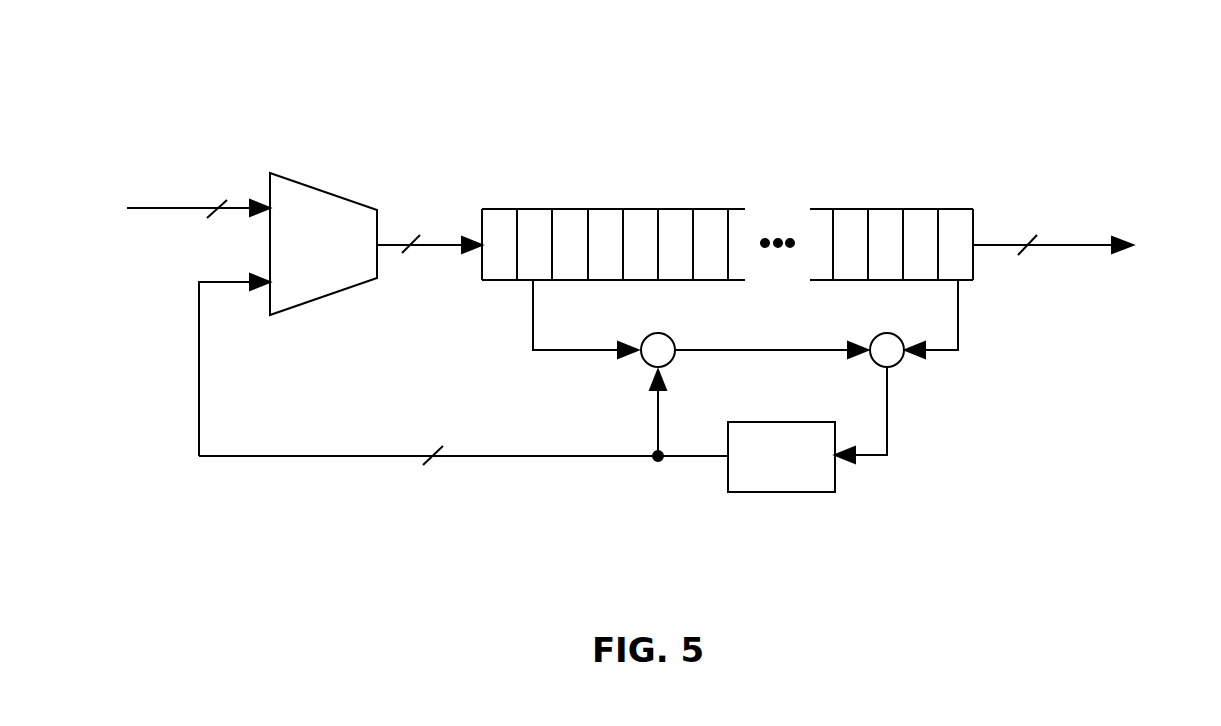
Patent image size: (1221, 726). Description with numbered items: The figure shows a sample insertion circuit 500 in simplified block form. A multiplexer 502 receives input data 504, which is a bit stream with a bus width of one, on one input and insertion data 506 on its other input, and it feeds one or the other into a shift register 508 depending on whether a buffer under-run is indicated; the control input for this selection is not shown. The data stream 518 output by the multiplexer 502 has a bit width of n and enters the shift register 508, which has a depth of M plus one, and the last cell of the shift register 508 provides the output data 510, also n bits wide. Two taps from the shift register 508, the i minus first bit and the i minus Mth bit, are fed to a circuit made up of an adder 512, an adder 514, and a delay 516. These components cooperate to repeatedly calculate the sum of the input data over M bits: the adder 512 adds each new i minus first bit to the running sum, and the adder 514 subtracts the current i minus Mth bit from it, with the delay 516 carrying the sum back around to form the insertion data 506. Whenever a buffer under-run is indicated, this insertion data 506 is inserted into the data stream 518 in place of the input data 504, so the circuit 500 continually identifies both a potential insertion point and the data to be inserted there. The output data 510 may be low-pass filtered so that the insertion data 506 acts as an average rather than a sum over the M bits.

The insertion circuit 500 is at (634, 33).
The multiplexer 502 is at (323, 244).
The input data 504 is at (180, 208).
The insertion data 506 is at (199, 403).
The shift register 508 is at (643, 209).
The output data 510 is at (1080, 245).
The adder 512 is at (670, 337).
The adder 514 is at (898, 365).
The delay 516 is at (781, 457).
The data stream 518 is at (450, 245).